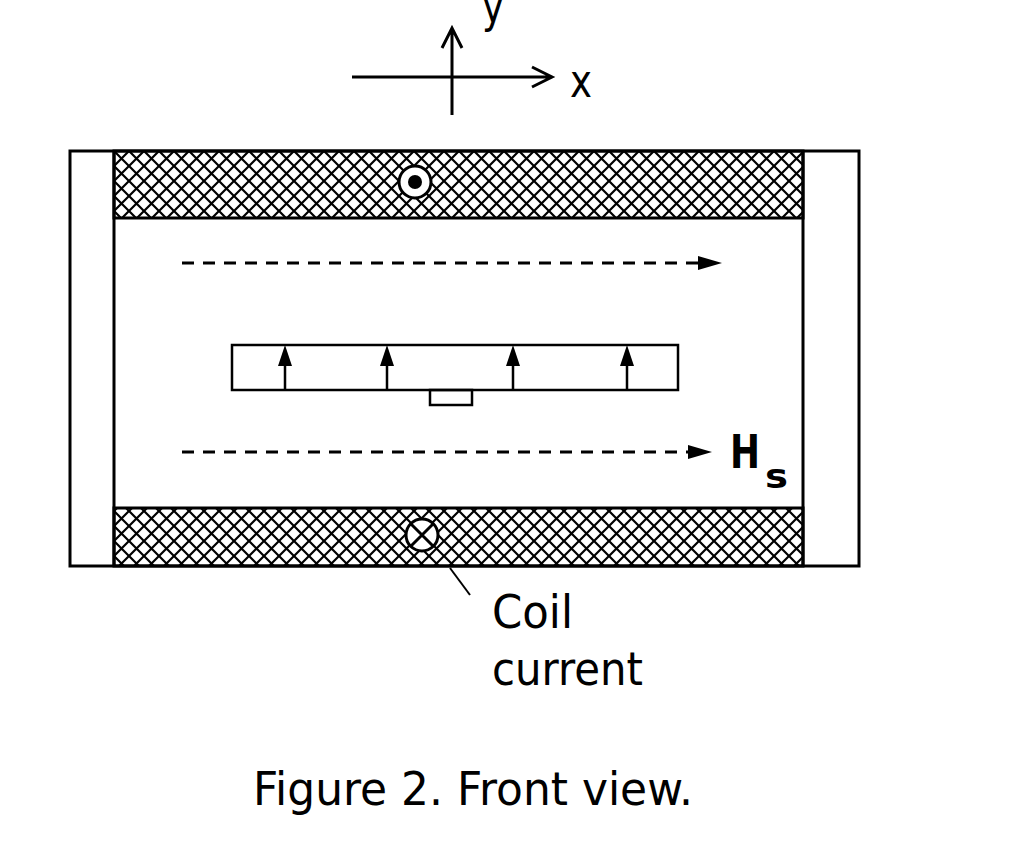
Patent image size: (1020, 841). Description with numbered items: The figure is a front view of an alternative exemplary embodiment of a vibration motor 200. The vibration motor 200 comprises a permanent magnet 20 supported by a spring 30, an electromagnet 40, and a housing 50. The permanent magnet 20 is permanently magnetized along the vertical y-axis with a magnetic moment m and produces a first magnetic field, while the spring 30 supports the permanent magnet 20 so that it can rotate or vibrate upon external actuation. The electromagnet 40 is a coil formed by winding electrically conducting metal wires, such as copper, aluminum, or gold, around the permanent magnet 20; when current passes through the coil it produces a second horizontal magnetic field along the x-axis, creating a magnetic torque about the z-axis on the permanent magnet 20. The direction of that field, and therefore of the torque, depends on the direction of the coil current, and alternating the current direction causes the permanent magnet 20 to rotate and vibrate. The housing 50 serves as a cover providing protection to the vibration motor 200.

The vibration motor 200 is at (708, 73).
The permanent magnet 20 is at (567, 358).
The spring 30 is at (452, 405).
The electromagnet 40 is at (295, 170).
The housing 50 is at (84, 508).